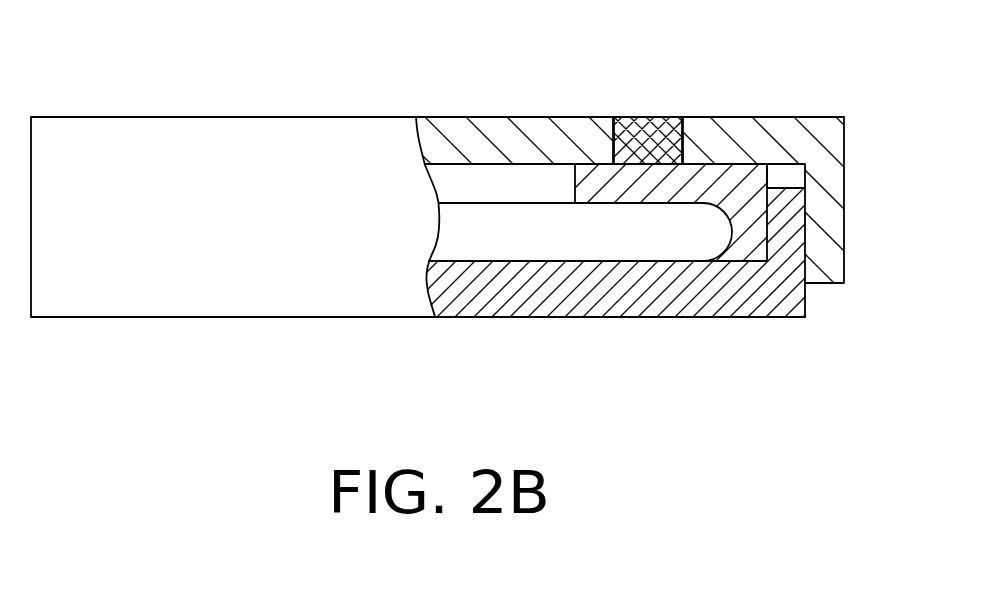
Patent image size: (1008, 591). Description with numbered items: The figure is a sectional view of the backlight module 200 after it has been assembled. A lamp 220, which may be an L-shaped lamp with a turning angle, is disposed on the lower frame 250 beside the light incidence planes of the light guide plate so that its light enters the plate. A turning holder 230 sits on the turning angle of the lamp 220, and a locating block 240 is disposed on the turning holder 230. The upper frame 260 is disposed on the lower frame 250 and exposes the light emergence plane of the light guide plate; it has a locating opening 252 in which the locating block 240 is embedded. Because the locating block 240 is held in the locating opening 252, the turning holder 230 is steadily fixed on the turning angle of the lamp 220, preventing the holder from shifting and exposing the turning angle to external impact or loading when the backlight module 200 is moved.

The backlight module 200 is at (891, 462).
The lamp 220 is at (573, 237).
The turning holder 230 is at (740, 198).
The locating block 240 is at (648, 133).
The lower frame 250 is at (773, 137).
The locating opening 252 is at (683, 147).
The upper frame 260 is at (760, 293).